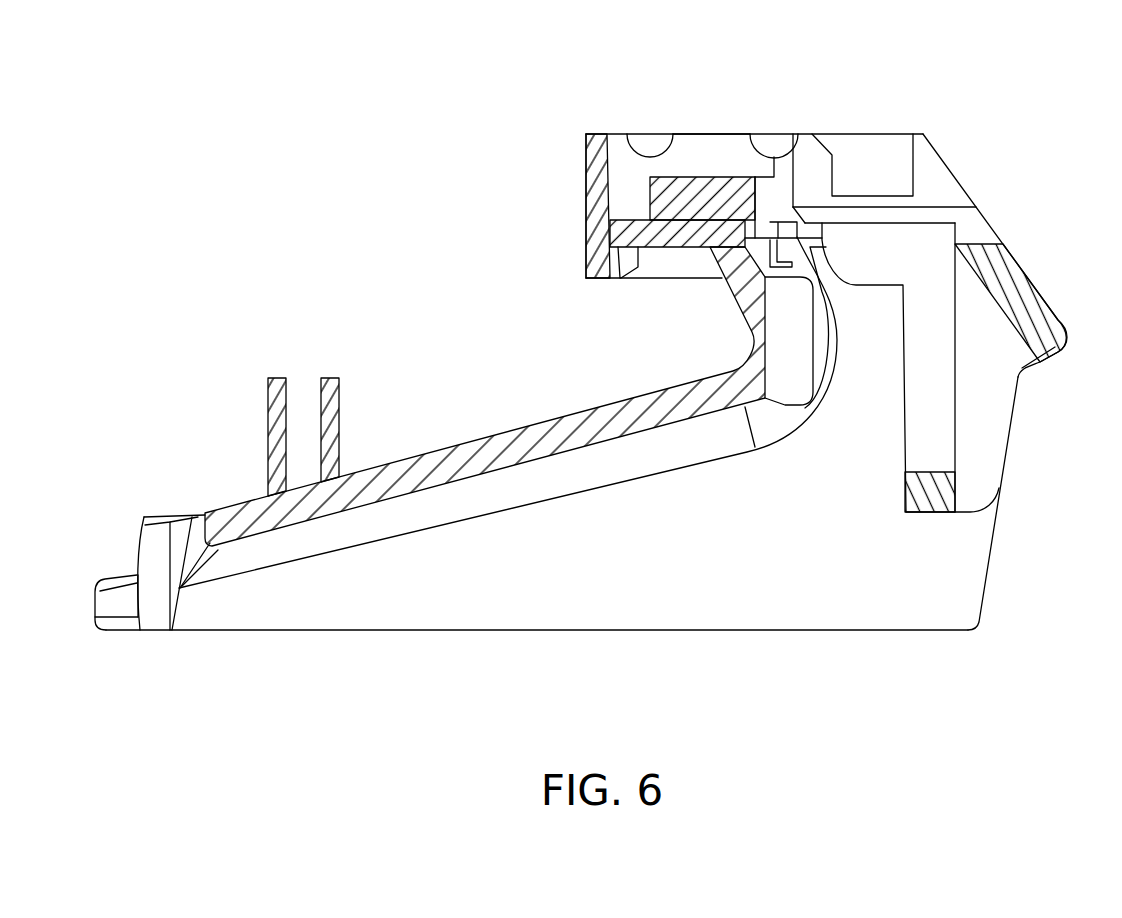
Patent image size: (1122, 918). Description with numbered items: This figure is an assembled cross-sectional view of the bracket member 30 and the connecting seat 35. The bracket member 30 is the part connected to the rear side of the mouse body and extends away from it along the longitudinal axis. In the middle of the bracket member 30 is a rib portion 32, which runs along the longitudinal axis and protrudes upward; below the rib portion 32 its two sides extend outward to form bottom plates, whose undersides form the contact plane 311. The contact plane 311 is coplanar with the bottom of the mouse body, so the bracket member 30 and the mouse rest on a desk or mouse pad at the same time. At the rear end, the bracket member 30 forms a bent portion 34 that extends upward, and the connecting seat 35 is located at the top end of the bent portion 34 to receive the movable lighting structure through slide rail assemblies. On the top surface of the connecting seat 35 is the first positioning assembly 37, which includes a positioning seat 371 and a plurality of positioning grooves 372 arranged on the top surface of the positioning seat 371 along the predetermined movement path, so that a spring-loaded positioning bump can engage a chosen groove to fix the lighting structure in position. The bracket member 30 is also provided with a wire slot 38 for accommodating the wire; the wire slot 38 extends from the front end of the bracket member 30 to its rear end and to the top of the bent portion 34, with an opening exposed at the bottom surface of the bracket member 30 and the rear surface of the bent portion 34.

The bracket member 30 is at (370, 370).
The contact plane 311 is at (412, 632).
The rib portion 32 is at (448, 446).
The bent portion 34 is at (995, 538).
The connecting seat 35 is at (586, 153).
The first positioning assembly 37 is at (697, 128).
The positioning seat 371 is at (725, 136).
The positioning grooves 372 is at (650, 136).
The wire slot 38 is at (594, 600).